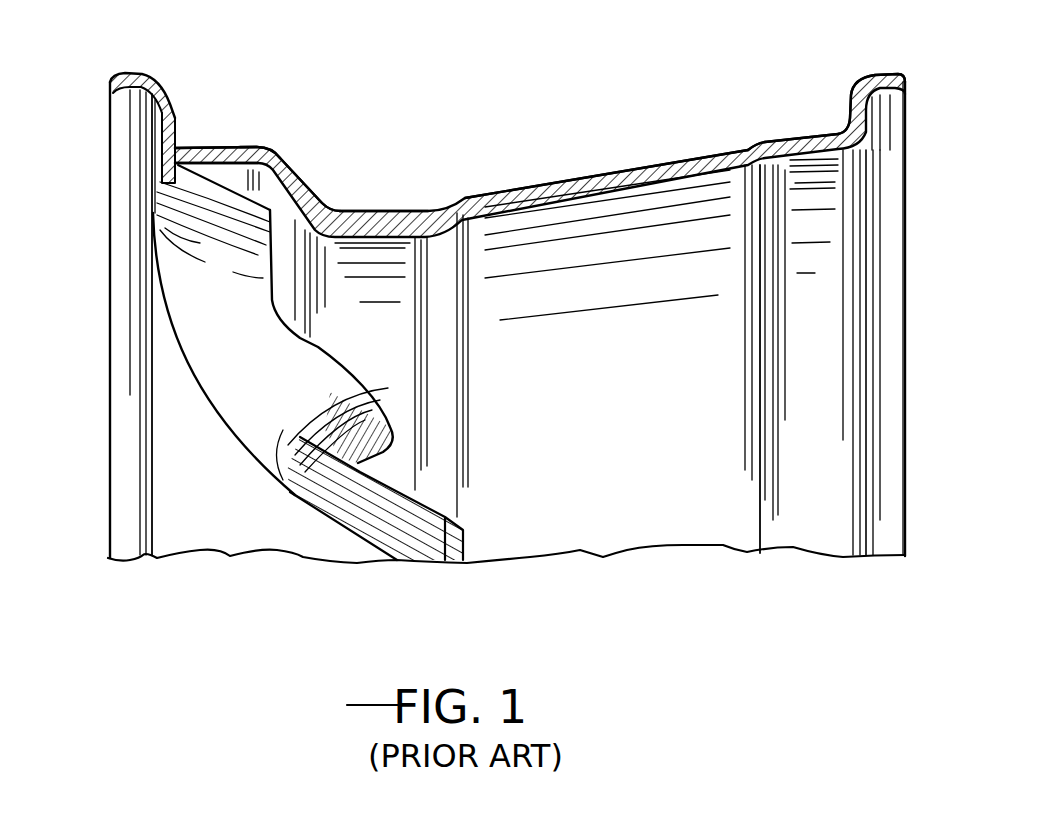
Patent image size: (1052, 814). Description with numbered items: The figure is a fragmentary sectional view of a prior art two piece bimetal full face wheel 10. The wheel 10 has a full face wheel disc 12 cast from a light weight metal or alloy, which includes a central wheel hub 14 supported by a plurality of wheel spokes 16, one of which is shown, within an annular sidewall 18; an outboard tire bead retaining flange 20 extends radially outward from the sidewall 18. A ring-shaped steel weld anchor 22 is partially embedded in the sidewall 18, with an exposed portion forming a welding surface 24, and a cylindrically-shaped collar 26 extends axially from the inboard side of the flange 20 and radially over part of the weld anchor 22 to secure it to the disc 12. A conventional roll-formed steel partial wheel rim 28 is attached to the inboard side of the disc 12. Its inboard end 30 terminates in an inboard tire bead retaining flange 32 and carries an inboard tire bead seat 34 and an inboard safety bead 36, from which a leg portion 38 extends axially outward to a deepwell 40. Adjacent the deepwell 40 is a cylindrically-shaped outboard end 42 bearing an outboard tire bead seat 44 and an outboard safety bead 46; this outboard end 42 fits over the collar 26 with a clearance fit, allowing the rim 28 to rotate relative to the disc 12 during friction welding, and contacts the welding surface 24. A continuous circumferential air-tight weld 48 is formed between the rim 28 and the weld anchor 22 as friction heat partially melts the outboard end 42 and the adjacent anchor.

The bimetal full face wheel 10 is at (421, 108).
The full face wheel disc 12 is at (100, 480).
The central wheel hub 14 is at (427, 513).
The wheel spoke 16 is at (290, 367).
The annular sidewall 18 is at (218, 217).
The outboard tire bead retaining flange 20 is at (163, 93).
The weld anchor 22 is at (185, 150).
The welding surface 24 is at (182, 146).
The collar 26 is at (180, 208).
The partial wheel rim 28 is at (504, 186).
The inboard end 30 is at (825, 416).
The inboard tire bead retaining flange 32 is at (850, 90).
The inboard tire bead seat 34 is at (787, 143).
The inboard safety bead 36 is at (762, 143).
The leg portion 38 is at (604, 173).
The deepwell 40 is at (377, 220).
The outboard end 42 is at (243, 148).
The outboard tire bead seat 44 is at (218, 147).
The outboard safety bead 46 is at (287, 160).
The weld 48 is at (177, 160).